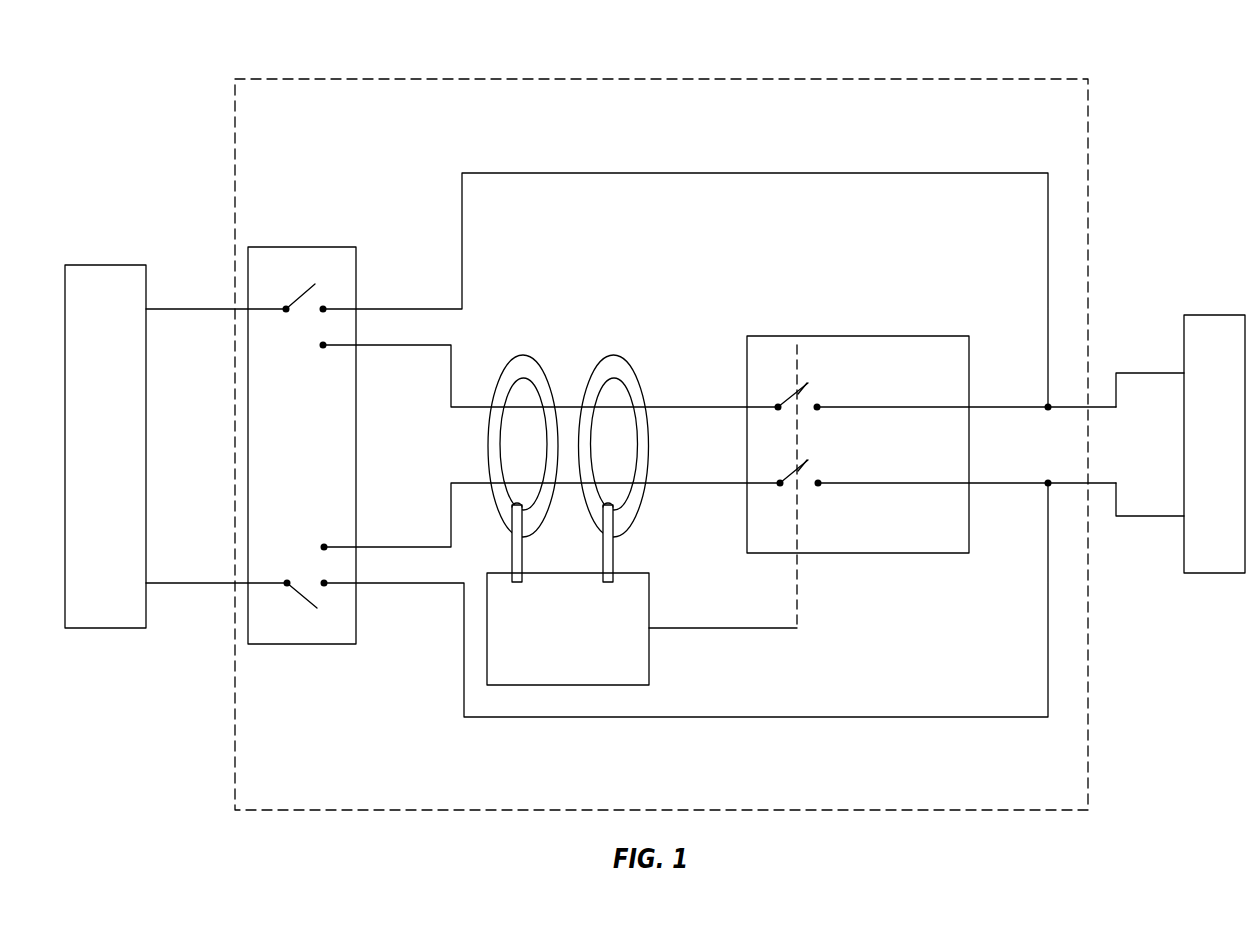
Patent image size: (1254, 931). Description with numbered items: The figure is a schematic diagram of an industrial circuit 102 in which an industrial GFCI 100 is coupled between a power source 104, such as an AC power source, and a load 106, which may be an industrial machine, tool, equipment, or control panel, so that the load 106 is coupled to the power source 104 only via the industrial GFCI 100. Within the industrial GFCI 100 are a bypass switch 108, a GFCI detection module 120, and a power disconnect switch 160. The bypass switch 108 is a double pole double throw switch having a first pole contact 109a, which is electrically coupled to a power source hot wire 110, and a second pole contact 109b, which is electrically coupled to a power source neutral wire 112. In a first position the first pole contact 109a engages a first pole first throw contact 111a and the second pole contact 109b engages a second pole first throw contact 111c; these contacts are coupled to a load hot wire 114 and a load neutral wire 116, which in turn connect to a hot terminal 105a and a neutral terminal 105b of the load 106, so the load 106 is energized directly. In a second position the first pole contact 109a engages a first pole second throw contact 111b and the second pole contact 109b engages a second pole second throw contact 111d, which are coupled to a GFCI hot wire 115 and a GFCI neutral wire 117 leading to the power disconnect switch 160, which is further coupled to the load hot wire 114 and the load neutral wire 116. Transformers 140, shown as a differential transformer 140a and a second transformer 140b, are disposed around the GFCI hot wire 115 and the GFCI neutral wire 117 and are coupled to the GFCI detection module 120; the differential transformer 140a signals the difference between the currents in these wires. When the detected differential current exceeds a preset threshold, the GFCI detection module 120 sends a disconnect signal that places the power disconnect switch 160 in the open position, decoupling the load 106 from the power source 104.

The industrial GFCI 100 is at (818, 79).
The industrial circuit 102 is at (169, 78).
The power source 104 is at (123, 265).
The hot terminal 105a is at (1182, 372).
The neutral terminal 105b is at (1182, 517).
The load 106 is at (1218, 315).
The bypass switch 108 is at (248, 268).
The first pole contact 109a is at (264, 312).
The second pole contact 109b is at (267, 583).
The power source hot wire 110 is at (160, 311).
The first pole first throw contact 111a is at (334, 308).
The first pole second throw contact 111b is at (334, 347).
The second pole first throw contact 111c is at (334, 586).
The second pole second throw contact 111d is at (334, 545).
The power source neutral wire 112 is at (161, 583).
The load hot wire 114 is at (690, 173).
The GFCI hot wire 115 is at (375, 347).
The load neutral wire 116 is at (818, 718).
The GFCI neutral wire 117 is at (375, 547).
The GFCI detection module 120 is at (652, 604).
The transformers 140 is at (589, 440).
The differential transformer 140a is at (525, 352).
The second current sensor 140b is at (615, 352).
The power disconnect switch 160 is at (910, 556).